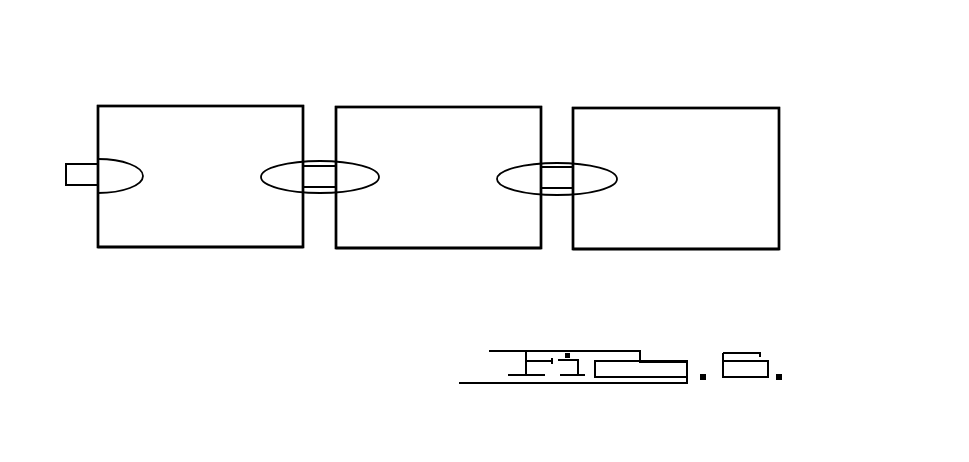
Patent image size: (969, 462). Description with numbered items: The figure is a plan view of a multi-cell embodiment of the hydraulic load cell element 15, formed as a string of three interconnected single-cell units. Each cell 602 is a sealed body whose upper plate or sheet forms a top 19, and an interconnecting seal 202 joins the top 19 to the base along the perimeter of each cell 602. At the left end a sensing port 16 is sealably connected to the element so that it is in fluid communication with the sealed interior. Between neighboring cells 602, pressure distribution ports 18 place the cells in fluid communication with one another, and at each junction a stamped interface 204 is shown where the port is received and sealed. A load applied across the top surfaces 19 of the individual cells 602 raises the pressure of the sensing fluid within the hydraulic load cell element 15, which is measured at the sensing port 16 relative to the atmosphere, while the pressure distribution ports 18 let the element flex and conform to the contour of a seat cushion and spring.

The hydraulic load cell element 15 is at (97, 93).
The sensing port 16 is at (74, 178).
The pressure distribution port 18 is at (323, 192).
The top 19 is at (155, 116).
The interconnecting seal 202 is at (218, 248).
The interface for the sensing port 204 is at (355, 165).
The cell 602 is at (132, 256).